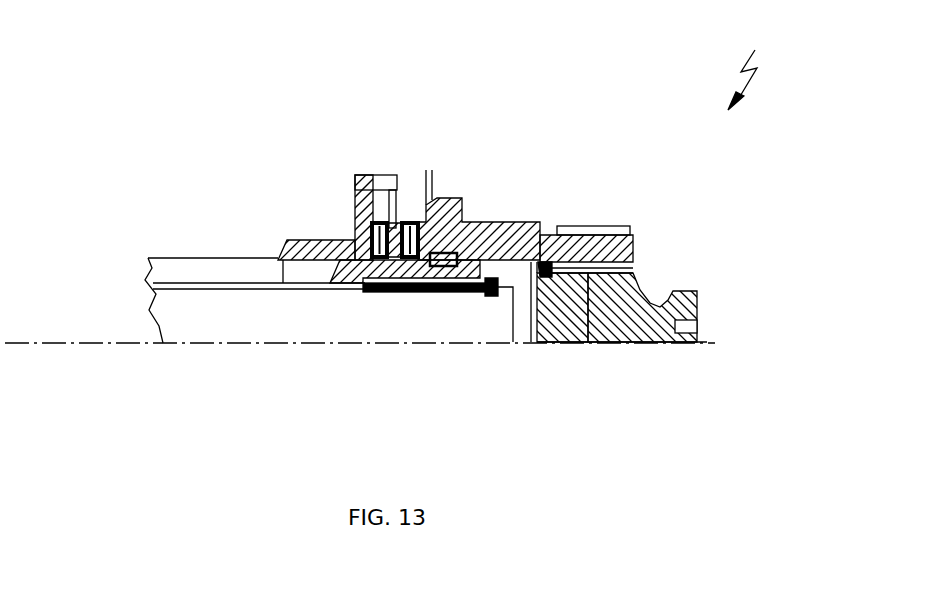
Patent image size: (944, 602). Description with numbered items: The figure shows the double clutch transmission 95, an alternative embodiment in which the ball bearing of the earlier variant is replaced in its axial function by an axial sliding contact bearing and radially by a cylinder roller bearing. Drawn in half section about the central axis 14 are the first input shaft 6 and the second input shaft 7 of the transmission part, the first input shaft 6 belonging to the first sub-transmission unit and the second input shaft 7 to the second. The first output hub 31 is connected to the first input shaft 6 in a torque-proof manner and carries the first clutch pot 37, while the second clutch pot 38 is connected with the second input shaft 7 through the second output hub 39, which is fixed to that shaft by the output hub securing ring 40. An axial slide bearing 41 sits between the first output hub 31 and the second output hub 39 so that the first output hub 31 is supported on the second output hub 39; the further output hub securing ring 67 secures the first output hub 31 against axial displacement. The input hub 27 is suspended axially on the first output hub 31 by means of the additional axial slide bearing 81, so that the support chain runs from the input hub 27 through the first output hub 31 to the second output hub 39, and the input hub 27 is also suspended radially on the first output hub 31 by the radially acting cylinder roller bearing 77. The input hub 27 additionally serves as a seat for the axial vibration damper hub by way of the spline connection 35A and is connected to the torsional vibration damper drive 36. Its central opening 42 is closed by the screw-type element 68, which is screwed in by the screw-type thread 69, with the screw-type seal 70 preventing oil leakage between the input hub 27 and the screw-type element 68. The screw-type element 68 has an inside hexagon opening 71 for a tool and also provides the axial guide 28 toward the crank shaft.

The central axis 14 is at (66, 343).
The second input shaft 7 is at (197, 269).
The first input shaft 6 is at (221, 326).
The second output hub 39 is at (285, 262).
The output hub securing ring 40 is at (318, 290).
The axial slide bearing 41 is at (383, 292).
The additional axial slide bearing 81 is at (412, 290).
The cylinder roller bearing 77 is at (457, 290).
The output hub securing ring 67 is at (492, 293).
The first output hub 31 is at (425, 292).
The central opening 42 is at (528, 315).
The second clutch pot 38 is at (381, 178).
The first clutch pot 37 is at (399, 203).
The torsional vibration damper drive 36 is at (440, 200).
The input hub 27 is at (451, 212).
The screw-type seal 70 is at (544, 266).
The spline connection 35A is at (589, 226).
The screw-type thread 69 is at (590, 305).
The screw-type element 68 is at (612, 310).
The axial guide 28 is at (677, 290).
The inside hexagon opening 71 is at (693, 343).
The double clutch transmission 95 is at (760, 66).